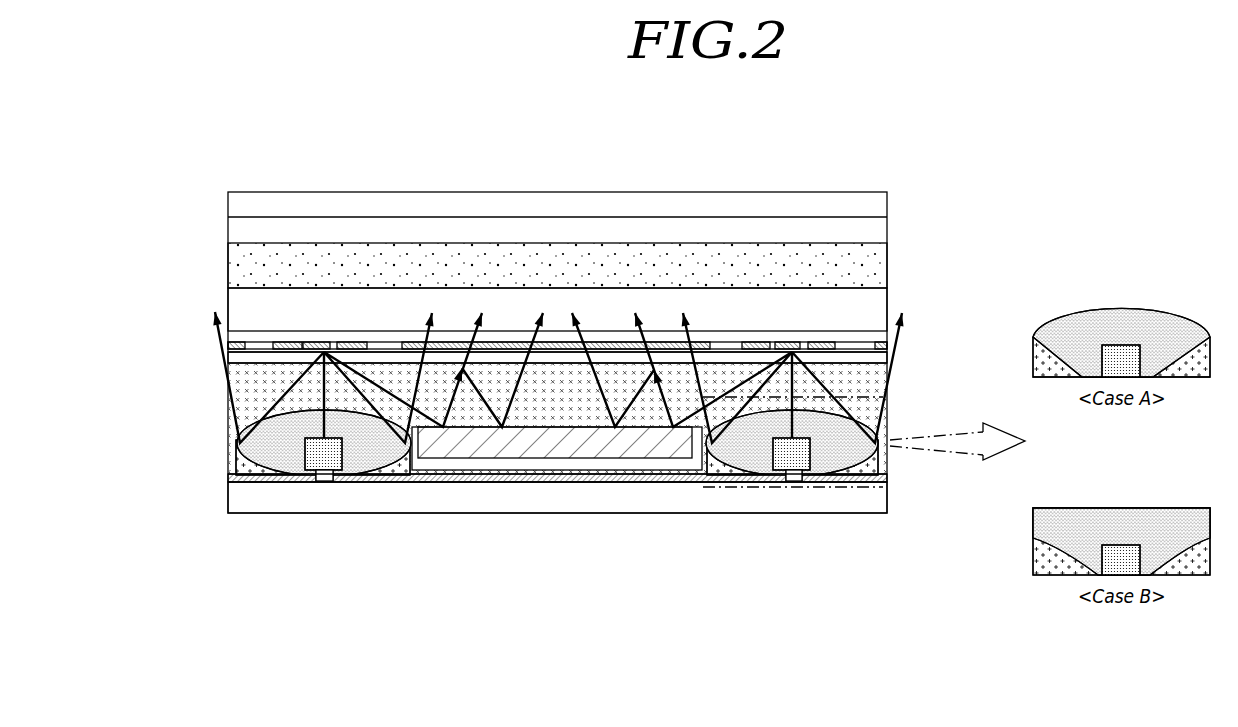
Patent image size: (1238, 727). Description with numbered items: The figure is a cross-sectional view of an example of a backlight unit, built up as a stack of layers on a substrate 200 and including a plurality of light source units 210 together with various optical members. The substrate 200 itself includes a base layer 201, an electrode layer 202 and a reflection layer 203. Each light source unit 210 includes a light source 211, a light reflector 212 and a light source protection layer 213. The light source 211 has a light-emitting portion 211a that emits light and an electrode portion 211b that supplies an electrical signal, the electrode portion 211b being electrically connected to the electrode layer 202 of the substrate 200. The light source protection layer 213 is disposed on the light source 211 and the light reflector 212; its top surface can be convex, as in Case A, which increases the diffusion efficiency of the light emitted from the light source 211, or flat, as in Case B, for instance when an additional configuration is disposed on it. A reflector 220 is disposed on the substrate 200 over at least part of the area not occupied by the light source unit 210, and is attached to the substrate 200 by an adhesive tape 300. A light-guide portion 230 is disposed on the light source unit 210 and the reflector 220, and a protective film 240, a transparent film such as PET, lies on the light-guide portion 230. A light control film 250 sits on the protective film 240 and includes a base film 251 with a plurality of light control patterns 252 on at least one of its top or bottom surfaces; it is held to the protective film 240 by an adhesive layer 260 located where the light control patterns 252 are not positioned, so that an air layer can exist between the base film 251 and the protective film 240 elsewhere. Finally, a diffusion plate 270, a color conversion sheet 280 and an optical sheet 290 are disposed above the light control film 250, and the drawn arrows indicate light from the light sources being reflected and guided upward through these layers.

The substrate 200 is at (557, 525).
The base layer 201 is at (582, 558).
The electrode layer 202 is at (523, 482).
The reflection layer 203 is at (575, 473).
The light source unit 210 is at (718, 455).
The light source 211 is at (702, 432).
The light-emitting portion 211a is at (302, 455).
The electrode portion 211b is at (335, 478).
The light reflector 212 is at (387, 468).
The light source protection layer 213 is at (268, 452).
The reflector 220 is at (617, 450).
The light-guide portion 230 is at (238, 395).
The protective film 240 is at (237, 358).
The light control film 250 is at (619, 338).
The base film 251 is at (875, 351).
The light control patterns 252 is at (827, 343).
The adhesive layer 260 is at (880, 363).
The diffusion plate 270 is at (235, 300).
The color conversion sheet 280 is at (235, 266).
The optical sheet 290 is at (235, 230).
The adhesive tape 300 is at (662, 462).